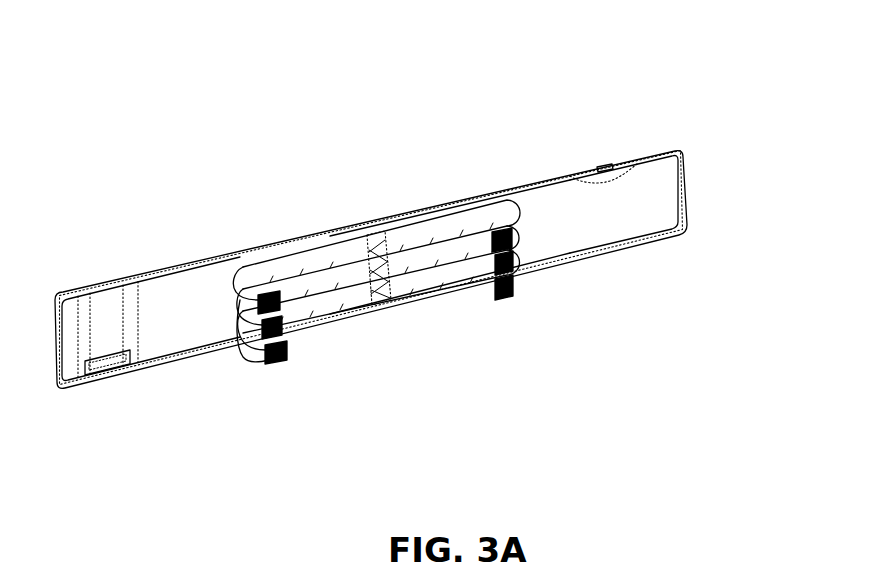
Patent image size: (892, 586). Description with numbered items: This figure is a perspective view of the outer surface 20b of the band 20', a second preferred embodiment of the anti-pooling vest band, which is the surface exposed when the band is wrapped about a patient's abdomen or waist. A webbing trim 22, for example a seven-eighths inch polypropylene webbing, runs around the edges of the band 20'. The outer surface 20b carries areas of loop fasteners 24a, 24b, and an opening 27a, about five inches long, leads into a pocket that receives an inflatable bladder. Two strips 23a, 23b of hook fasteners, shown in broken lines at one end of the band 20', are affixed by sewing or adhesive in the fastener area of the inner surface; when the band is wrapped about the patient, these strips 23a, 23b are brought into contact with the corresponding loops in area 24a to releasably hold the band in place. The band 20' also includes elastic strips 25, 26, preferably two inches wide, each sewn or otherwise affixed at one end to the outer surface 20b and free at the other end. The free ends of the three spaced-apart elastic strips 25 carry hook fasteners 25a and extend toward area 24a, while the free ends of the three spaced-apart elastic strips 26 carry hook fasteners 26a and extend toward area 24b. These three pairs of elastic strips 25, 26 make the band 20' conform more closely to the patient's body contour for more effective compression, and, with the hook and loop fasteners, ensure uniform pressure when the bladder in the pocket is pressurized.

The band 20' is at (428, 245).
The outer surface 20b is at (637, 210).
The webbing trim 22 is at (667, 143).
The strip of fasteners 23a is at (132, 307).
The strip of fasteners 23b is at (83, 323).
The area of loop fasteners 24a is at (583, 220).
The area of loop fasteners 24b is at (157, 335).
The elastic strip 25 is at (405, 242).
The fastener 25a is at (500, 238).
The elastic strip 26 is at (345, 242).
The fastener 26a is at (275, 300).
The opening 27a is at (608, 163).